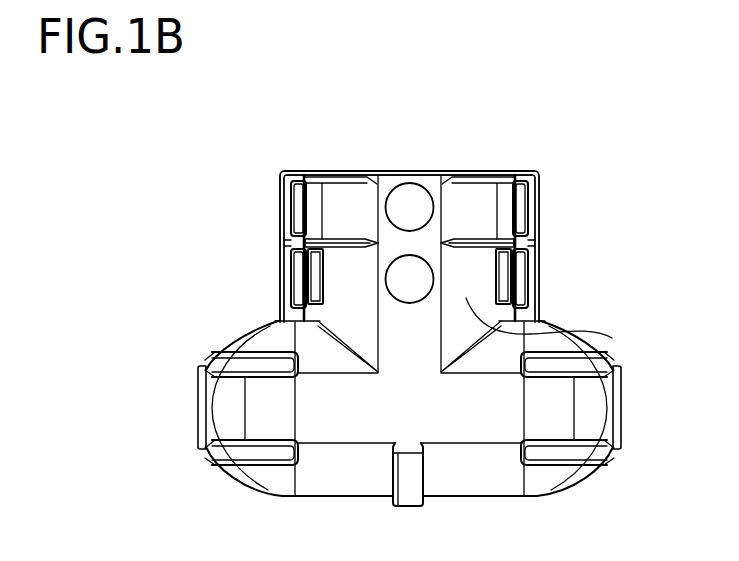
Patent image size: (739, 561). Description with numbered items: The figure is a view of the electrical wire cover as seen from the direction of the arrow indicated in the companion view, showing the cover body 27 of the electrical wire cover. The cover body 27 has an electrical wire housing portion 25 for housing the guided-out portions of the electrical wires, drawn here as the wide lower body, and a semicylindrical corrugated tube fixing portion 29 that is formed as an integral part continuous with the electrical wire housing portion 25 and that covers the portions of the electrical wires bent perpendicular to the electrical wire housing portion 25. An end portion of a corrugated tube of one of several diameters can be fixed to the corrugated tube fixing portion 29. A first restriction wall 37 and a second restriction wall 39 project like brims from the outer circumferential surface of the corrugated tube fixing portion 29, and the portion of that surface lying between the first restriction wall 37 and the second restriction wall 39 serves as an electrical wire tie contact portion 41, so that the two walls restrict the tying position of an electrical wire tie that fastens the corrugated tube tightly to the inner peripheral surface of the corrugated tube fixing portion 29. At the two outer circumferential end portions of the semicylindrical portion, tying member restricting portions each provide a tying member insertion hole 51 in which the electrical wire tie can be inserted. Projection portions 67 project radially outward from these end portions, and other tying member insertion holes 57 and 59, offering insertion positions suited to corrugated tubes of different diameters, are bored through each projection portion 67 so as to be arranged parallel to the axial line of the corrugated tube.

The electrical wire housing portion 25 is at (628, 405).
The cover body 27 is at (586, 124).
The corrugated tube fixing portion 29 is at (440, 154).
The first restriction wall 37 is at (326, 176).
The second restriction wall 39 is at (346, 240).
The electrical wire tie contact portion 41 is at (353, 194).
The tying member insertion hole 51 is at (313, 278).
The other tying member insertion hole 57 is at (300, 194).
The other tying member insertion hole 59 is at (298, 298).
The projection portion 67 is at (283, 228).